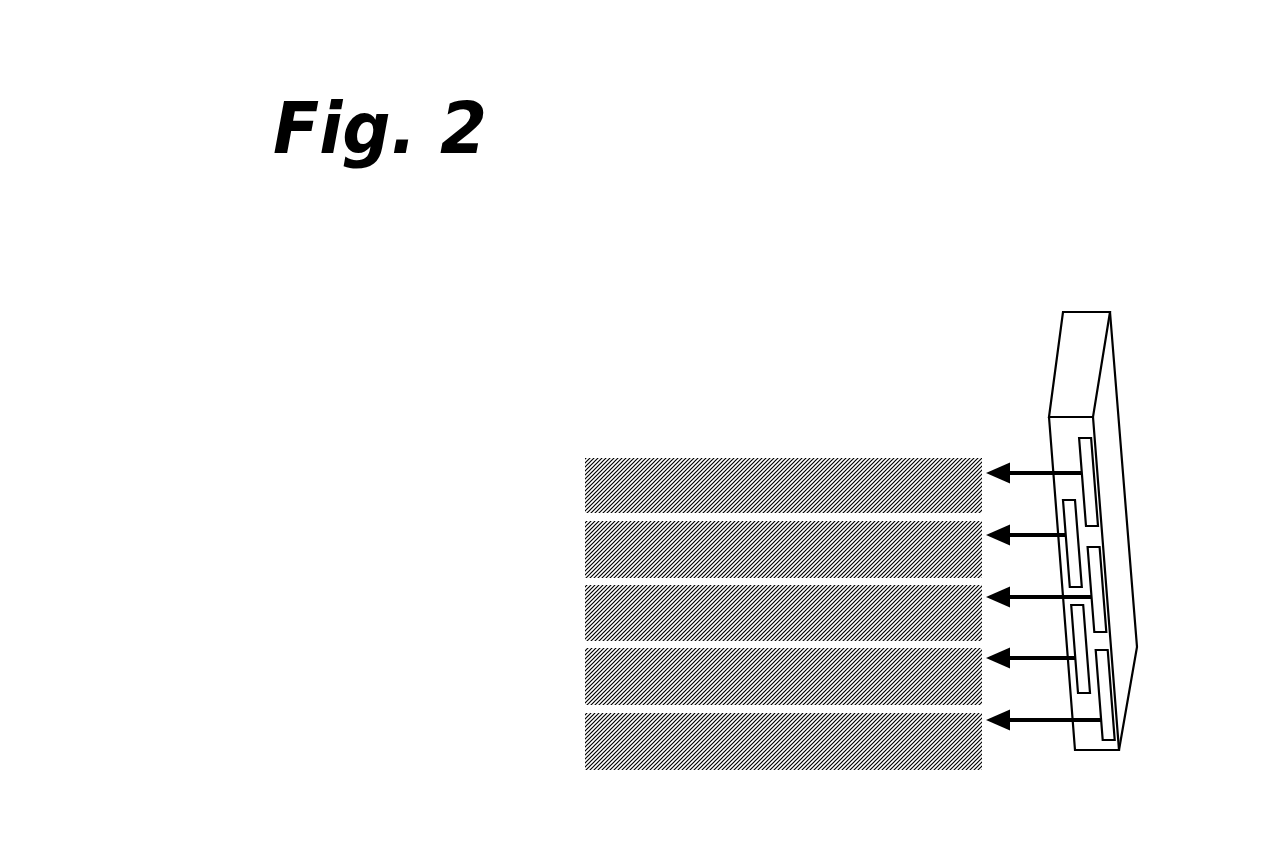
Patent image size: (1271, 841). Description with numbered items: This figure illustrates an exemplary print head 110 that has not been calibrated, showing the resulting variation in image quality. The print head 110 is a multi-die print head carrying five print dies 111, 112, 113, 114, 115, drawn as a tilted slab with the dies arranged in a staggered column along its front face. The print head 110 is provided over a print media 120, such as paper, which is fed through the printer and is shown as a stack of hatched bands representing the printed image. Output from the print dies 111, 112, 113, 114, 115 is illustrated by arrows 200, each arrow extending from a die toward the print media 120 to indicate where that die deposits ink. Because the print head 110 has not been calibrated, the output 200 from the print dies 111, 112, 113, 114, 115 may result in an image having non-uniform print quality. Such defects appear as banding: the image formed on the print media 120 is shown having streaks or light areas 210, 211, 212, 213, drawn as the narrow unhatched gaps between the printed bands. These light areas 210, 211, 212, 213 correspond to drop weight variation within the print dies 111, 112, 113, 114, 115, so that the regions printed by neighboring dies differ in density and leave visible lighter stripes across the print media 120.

The print head 110 is at (1104, 518).
The print die 111 is at (1095, 479).
The print die 112 is at (1079, 545).
The print die 113 is at (1105, 598).
The print die 114 is at (1076, 655).
The print die 115 is at (1112, 712).
The print media 120 is at (783, 458).
The output 200 is at (999, 426).
The light area 210 is at (585, 513).
The light area 211 is at (585, 580).
The light area 212 is at (585, 643).
The light area 213 is at (585, 707).